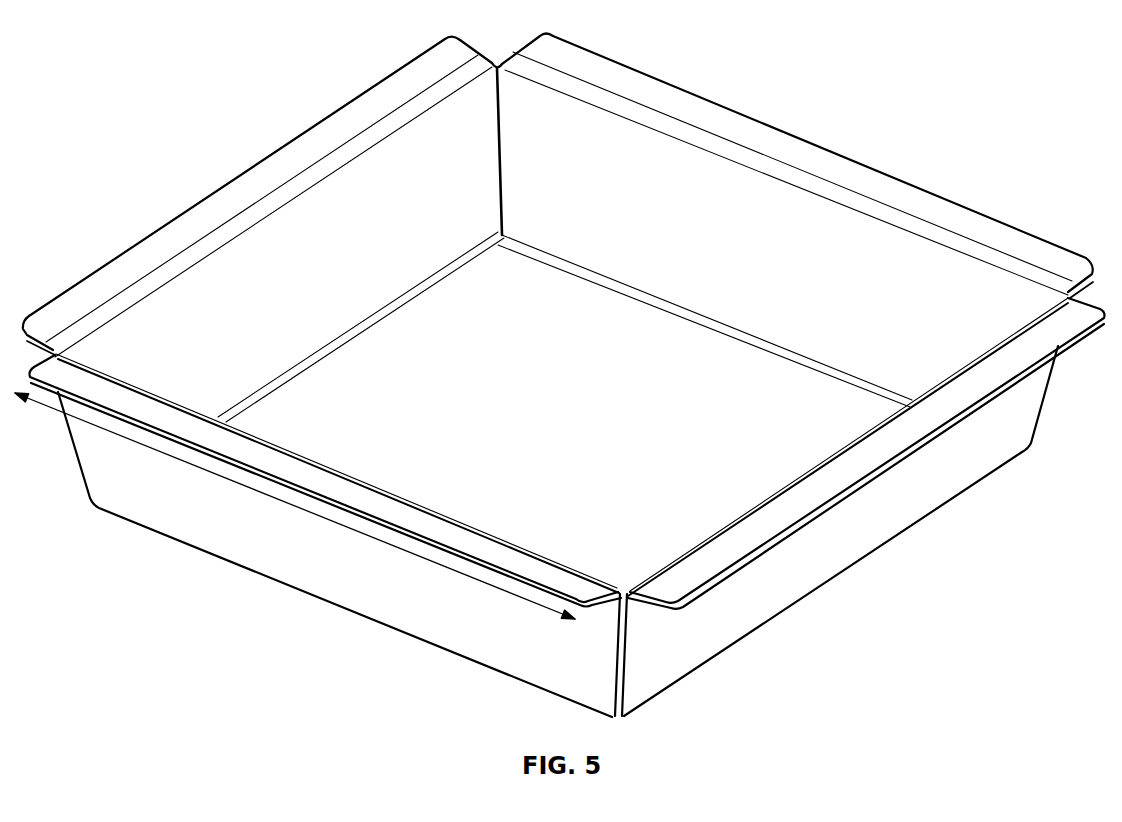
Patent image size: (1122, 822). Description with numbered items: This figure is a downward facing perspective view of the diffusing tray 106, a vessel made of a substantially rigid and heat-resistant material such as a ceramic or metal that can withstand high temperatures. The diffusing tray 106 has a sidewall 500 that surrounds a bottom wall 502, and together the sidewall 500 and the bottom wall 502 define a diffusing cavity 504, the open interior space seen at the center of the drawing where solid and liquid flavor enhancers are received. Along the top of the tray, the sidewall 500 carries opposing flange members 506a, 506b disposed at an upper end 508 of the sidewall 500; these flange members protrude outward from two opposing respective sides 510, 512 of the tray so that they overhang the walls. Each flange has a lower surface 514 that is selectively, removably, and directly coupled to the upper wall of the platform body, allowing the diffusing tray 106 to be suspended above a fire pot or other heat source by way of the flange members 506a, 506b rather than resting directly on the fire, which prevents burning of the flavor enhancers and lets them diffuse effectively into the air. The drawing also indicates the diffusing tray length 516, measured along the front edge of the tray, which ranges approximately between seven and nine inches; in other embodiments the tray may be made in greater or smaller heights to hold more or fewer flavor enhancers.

The sidewall 500 is at (226, 289).
The bottom wall 502 is at (494, 383).
The diffusing cavity 504 is at (705, 321).
The flange member 506a is at (352, 121).
The flange member 506b is at (746, 524).
The upper end 508 is at (1015, 268).
The side 510 is at (822, 457).
The side 512 is at (238, 243).
The lower surface 514 is at (684, 603).
The diffusing tray length 516 is at (263, 493).
The diffusing tray 106 is at (808, 250).